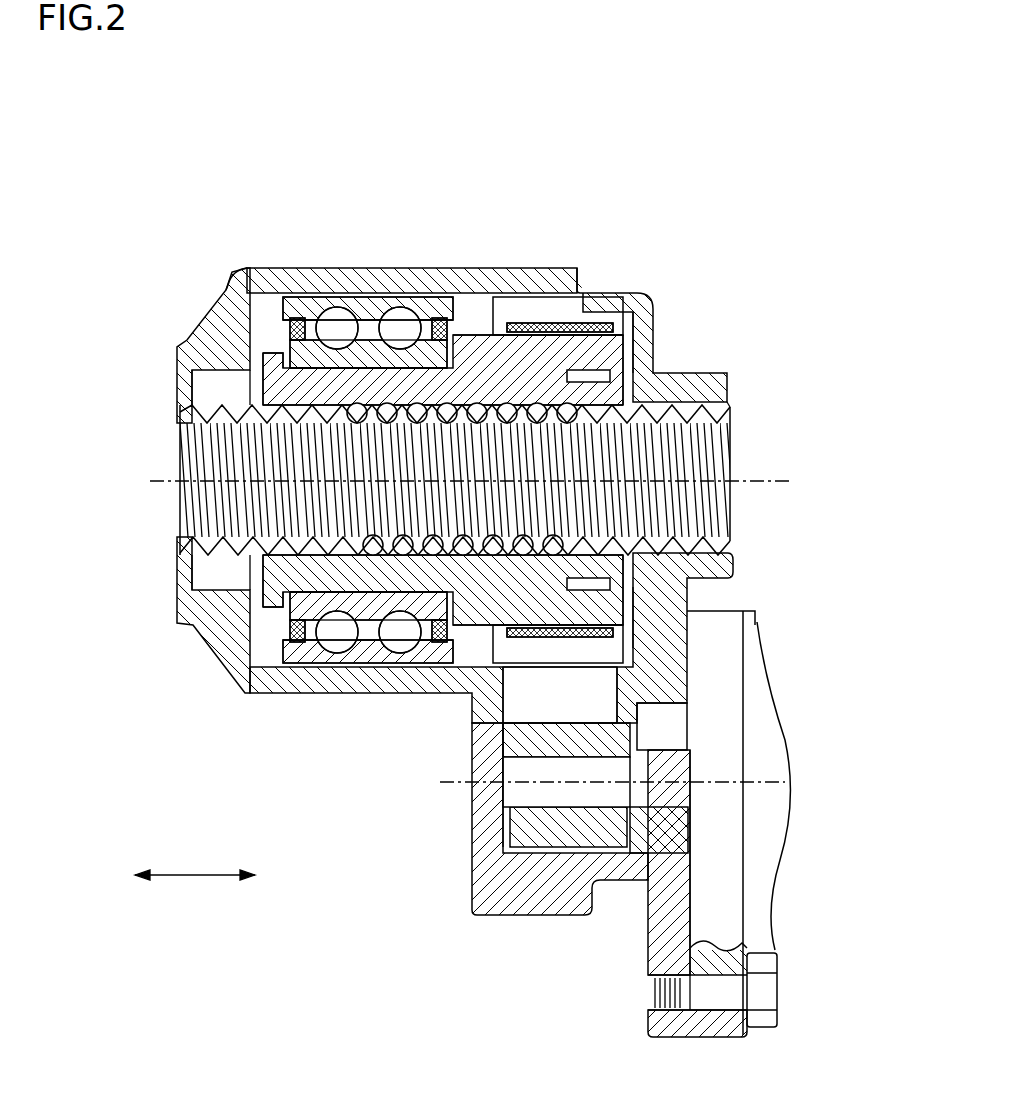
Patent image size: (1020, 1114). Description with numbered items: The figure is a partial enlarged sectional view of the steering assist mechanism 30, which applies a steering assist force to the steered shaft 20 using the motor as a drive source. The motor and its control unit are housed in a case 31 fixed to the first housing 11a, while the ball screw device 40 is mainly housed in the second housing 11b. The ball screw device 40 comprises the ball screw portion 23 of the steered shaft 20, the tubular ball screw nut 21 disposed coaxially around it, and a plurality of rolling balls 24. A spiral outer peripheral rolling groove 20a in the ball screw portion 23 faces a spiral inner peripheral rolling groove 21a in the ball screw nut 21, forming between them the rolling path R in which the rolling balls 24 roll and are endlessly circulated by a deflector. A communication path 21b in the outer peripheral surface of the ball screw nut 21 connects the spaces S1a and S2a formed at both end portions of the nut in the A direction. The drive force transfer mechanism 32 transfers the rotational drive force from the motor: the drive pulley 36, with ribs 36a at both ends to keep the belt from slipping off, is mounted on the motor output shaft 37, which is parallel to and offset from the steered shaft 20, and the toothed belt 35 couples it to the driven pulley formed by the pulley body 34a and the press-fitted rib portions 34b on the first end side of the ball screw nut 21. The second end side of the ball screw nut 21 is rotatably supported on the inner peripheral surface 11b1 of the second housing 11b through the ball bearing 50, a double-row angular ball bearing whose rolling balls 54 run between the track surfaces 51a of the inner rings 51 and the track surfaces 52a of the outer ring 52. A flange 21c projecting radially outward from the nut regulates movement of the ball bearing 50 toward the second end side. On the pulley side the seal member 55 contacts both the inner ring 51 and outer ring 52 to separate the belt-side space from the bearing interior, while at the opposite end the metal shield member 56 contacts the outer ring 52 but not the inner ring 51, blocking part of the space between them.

The first housing 11a is at (575, 265).
The second housing 11b is at (283, 267).
The inner peripheral surface 11b1 is at (240, 275).
The steered shaft 20 is at (531, 431).
The outer peripheral rolling groove 20a is at (722, 402).
The ball screw nut 21 is at (523, 385).
The inner peripheral rolling groove 21a is at (690, 450).
The communication path 21b is at (470, 335).
The flange 21c is at (235, 357).
The ball screw portion 23 is at (733, 392).
The rolling balls 24 is at (565, 400).
The steering assist mechanism 30 is at (490, 888).
The case 31 is at (760, 628).
The drive force transfer mechanism 32 is at (465, 874).
The pulley body 34a is at (620, 335).
The rib portions 34b is at (487, 300).
The toothed belt 35 is at (548, 708).
The drive pulley 36 is at (537, 860).
The ribs 36a is at (505, 830).
The output shaft 37 is at (647, 860).
The ball screw device 40 is at (243, 600).
The ball bearing 50 is at (303, 297).
The inner ring 51 is at (285, 310).
The track surfaces 51a is at (347, 300).
The outer ring 52 is at (330, 350).
The track surfaces 52a is at (300, 422).
The rolling balls 54 is at (377, 305).
The seal member 55 is at (443, 300).
The shield member 56 is at (292, 325).
The space S1a is at (245, 380).
The space S2a is at (628, 360).
The rolling path R is at (688, 500).
The A direction A is at (195, 859).